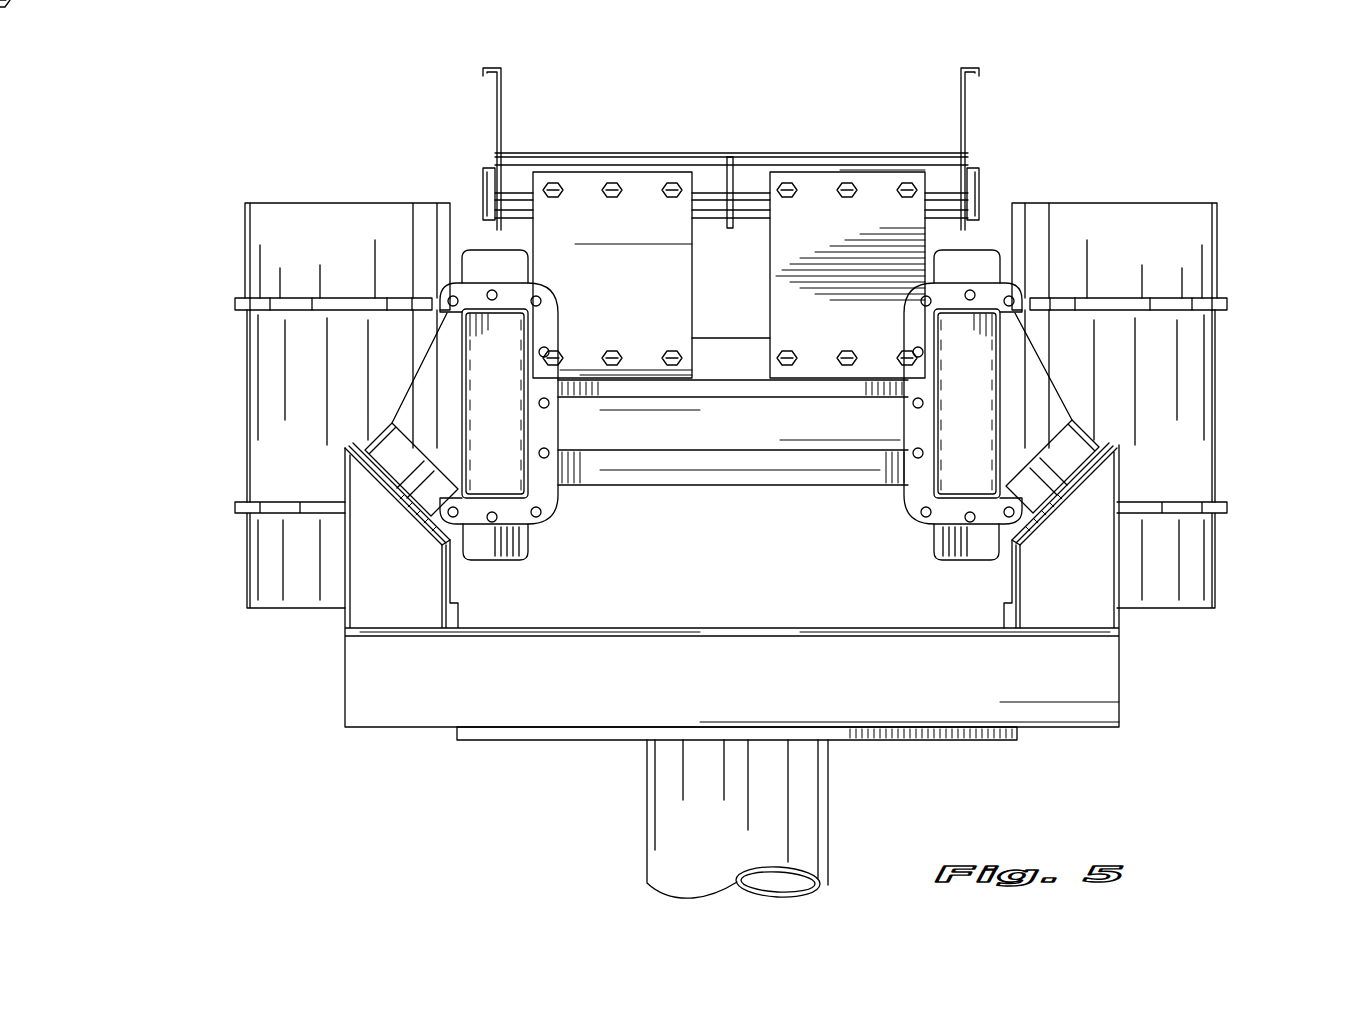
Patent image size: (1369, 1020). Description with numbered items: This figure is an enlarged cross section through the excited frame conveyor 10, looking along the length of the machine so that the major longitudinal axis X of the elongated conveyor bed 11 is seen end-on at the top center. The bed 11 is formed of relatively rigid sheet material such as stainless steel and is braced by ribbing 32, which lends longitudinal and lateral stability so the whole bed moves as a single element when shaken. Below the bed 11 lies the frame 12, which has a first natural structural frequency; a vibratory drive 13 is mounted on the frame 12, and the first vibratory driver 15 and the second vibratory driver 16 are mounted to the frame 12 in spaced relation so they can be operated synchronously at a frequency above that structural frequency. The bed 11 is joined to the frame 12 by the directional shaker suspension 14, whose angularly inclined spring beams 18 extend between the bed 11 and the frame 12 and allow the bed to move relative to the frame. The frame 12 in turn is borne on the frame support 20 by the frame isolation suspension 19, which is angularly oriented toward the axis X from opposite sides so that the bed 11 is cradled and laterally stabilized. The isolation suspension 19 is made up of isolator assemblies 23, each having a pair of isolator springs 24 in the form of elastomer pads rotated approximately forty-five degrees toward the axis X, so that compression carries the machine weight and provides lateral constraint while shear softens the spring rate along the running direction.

The excited frame conveyor 10 is at (1028, 98).
The conveyor bed 11 is at (845, 70).
The frame 12 is at (1004, 355).
The vibratory drive 13 is at (1223, 246).
The directional shaker suspension 14 is at (768, 262).
The first vibratory driver 15 is at (262, 543).
The second vibratory driver 16 is at (1190, 440).
The spring beams 18 is at (785, 310).
The frame isolation suspension 19 is at (380, 435).
The frame support 20 is at (830, 796).
The isolator assemblies 23 is at (432, 380).
The isolator springs 24 is at (1088, 472).
The ribbing 32 is at (738, 168).
The major longitudinal axis X is at (728, 107).